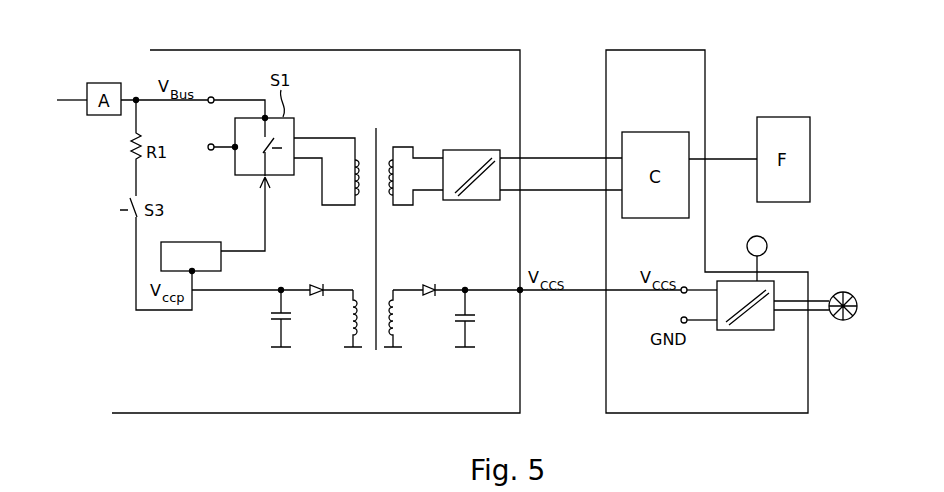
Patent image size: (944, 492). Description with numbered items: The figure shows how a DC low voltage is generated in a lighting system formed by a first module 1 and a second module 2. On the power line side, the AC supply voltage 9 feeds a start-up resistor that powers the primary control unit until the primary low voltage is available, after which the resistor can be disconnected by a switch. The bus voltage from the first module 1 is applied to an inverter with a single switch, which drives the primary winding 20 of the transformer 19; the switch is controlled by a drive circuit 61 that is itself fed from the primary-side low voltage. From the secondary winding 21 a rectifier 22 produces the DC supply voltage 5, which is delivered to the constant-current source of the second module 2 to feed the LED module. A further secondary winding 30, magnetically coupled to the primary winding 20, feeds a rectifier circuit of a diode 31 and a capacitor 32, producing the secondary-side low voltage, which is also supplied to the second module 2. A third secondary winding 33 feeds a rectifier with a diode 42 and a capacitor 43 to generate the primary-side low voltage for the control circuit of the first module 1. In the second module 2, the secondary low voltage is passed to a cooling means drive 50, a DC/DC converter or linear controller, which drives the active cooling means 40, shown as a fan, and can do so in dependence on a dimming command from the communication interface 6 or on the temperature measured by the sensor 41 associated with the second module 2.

The first module 1 is at (377, 415).
The second module 2 is at (657, 50).
The DC supply voltage 5 is at (578, 157).
The communication interface 6 is at (573, 294).
The AC supply voltage 9 is at (68, 96).
The transformer 19 is at (378, 130).
The primary winding 20 is at (341, 137).
The secondary winding 21 is at (407, 148).
The rectifier 22 is at (476, 150).
The further secondary winding 30 is at (399, 352).
The diode 31 is at (439, 289).
The capacitor 32 is at (477, 316).
The third secondary winding 33 is at (357, 352).
The active cooling means 40 is at (846, 291).
The sensor 41 is at (749, 239).
The diode 42 is at (325, 289).
The capacitor 43 is at (292, 315).
The cooling means drive 50 is at (745, 331).
The control IC 61 is at (197, 242).